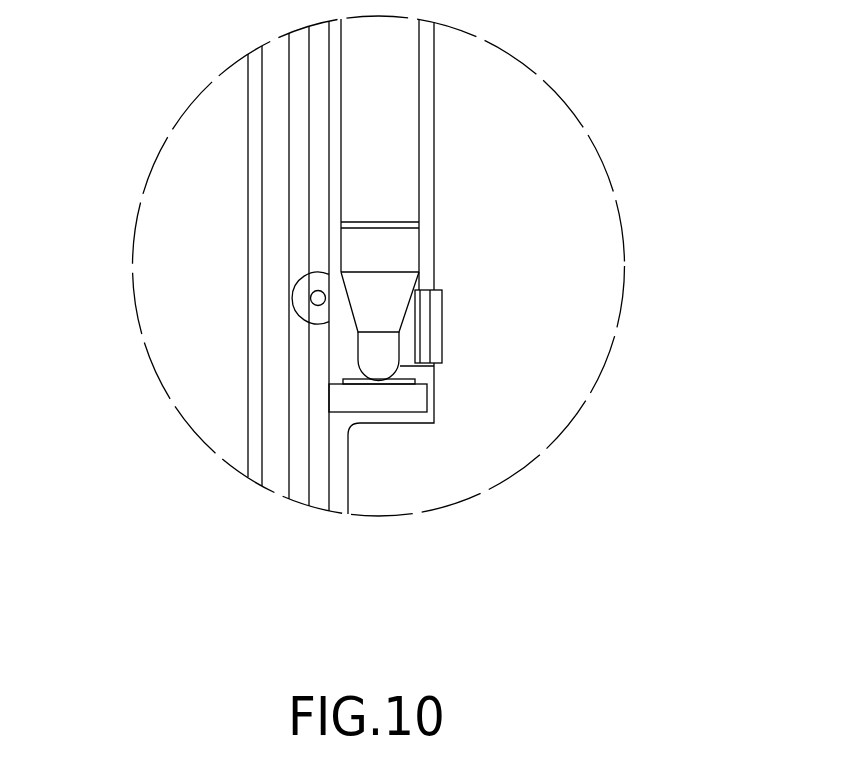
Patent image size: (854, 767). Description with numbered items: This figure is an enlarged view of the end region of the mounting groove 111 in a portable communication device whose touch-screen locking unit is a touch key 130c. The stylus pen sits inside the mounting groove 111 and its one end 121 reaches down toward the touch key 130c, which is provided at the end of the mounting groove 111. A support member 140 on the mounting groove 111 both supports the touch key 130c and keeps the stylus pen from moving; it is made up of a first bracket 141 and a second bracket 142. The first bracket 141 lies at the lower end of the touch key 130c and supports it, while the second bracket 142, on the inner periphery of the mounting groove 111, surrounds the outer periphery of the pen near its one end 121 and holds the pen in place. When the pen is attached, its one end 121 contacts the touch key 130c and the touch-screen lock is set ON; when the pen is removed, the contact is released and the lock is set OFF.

The mounting groove 111 is at (333, 176).
The one end of the stylus pen 121 is at (375, 352).
The touch key 130c is at (343, 381).
The support member 140 is at (535, 356).
The first bracket 141 is at (417, 396).
The second bracket 142 is at (433, 334).